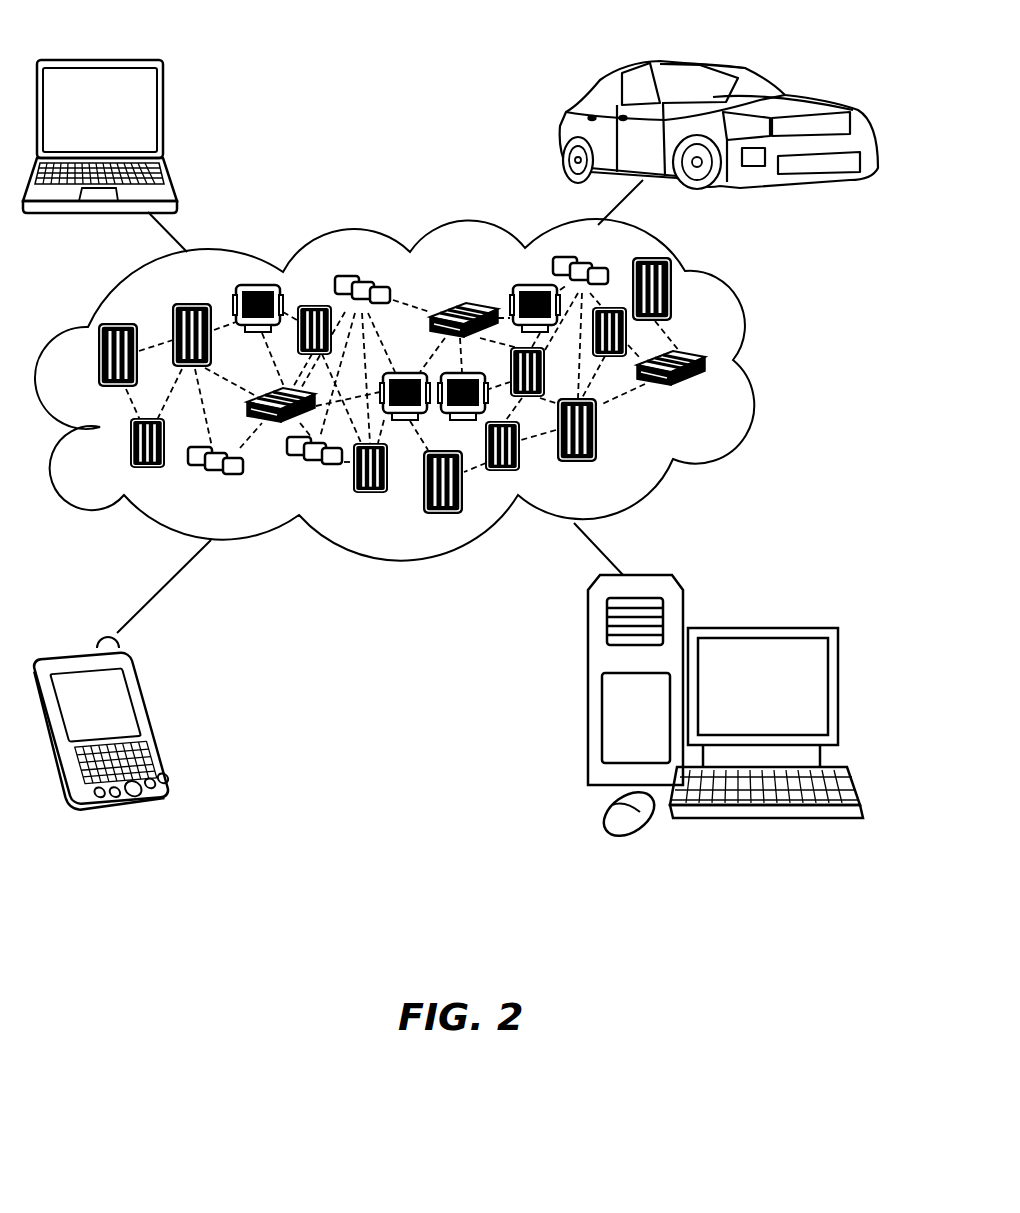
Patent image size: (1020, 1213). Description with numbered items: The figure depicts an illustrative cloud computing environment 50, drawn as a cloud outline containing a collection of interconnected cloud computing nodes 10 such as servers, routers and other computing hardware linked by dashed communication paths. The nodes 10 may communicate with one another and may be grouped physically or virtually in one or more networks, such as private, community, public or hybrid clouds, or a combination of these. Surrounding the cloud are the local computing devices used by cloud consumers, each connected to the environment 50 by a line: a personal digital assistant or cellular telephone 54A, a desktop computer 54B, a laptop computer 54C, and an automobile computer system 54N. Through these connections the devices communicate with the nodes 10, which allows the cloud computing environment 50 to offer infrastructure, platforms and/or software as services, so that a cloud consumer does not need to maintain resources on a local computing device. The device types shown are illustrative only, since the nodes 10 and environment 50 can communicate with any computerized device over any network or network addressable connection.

The cloud computing nodes 10 is at (716, 396).
The cloud computing environment 50 is at (766, 366).
The personal digital assistant (PDA) or cellular telephone 54A is at (155, 713).
The desktop computer 54B is at (762, 628).
The laptop computer 54C is at (164, 118).
The automobile computer system 54N is at (562, 128).